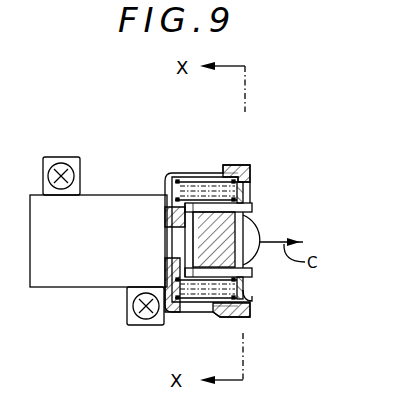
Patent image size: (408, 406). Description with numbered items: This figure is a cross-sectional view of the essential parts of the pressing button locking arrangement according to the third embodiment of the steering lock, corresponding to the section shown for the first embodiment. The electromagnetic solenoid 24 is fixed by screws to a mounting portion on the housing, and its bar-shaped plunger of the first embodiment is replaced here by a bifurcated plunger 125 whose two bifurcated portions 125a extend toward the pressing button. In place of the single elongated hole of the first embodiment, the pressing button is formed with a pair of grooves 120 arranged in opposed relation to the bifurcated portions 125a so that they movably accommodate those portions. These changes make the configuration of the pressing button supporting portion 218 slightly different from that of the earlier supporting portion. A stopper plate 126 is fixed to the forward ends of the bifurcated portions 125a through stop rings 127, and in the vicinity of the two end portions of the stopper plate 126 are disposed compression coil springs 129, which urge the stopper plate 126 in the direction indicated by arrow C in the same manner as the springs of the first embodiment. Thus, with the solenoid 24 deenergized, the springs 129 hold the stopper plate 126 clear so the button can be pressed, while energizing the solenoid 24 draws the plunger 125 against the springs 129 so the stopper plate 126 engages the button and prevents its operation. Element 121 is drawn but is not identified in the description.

The electromagnetic solenoid 24 is at (58, 280).
The pressing button supporting portion 218 is at (166, 173).
The bifurcated portions 125a is at (198, 200).
The grooves 120 is at (212, 204).
The compression coil springs 129 is at (233, 168).
The stop rings 127 is at (244, 192).
The bifurcated plunger 125 is at (250, 208).
The lens holder 121 is at (232, 238).
The stopper plate 126 is at (246, 231).